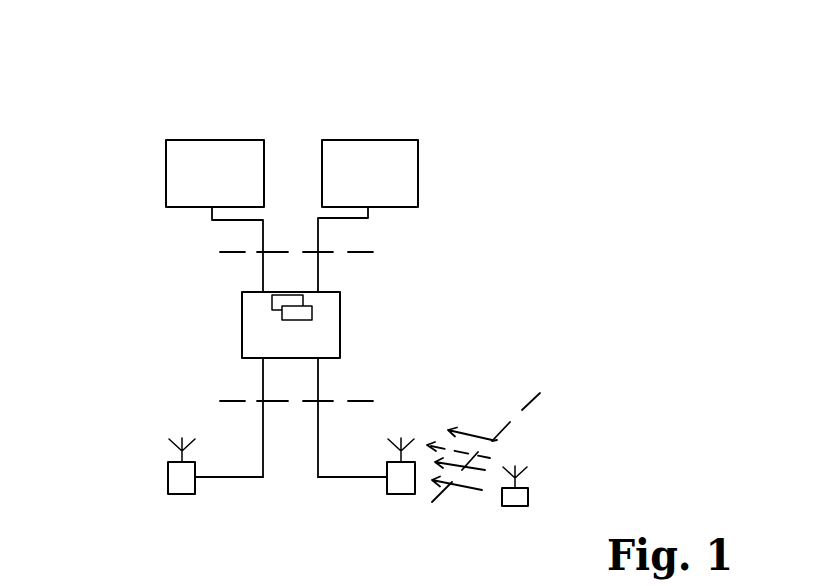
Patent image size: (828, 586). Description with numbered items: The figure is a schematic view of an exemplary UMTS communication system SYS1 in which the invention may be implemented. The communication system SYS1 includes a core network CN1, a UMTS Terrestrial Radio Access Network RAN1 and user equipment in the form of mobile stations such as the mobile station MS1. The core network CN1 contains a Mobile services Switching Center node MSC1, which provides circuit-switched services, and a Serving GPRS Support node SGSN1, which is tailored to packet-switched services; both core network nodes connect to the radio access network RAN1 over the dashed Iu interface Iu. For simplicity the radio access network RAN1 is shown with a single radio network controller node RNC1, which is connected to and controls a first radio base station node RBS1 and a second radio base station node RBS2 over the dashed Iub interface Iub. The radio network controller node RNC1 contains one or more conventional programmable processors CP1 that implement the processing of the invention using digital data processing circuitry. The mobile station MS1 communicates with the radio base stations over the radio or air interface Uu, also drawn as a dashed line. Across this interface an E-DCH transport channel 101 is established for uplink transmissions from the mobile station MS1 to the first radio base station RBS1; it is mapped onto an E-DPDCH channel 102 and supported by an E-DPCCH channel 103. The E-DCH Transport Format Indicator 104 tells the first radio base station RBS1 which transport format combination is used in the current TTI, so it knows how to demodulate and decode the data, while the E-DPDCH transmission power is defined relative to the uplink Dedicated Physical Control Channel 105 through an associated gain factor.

The communication system SYS1 is at (697, 34).
The core network CN1 is at (83, 147).
The radio access network RAN1 is at (108, 315).
The Mobile services Switching Center node MSC1 is at (212, 140).
The Serving GPRS Support node SGSN1 is at (368, 140).
The radio network controller node RNC1 is at (248, 384).
The programmable processor CP1 is at (303, 320).
The first radio base station node RBS1 is at (400, 494).
The second radio base station node RBS2 is at (182, 494).
The mobile station MS1 is at (515, 506).
The Iu interface Iu is at (272, 249).
The Iub interface Iub is at (270, 399).
The Uu interface Uu is at (504, 435).
The E-DCH transport channel 101 is at (427, 442).
The E-DPDCH channel 102 is at (486, 469).
The E-DPCCH channel 103 is at (497, 440).
The E-DCH Transport Format Indicator 104 is at (475, 436).
The uplink Dedicated Physical Control Channel 105 is at (452, 487).